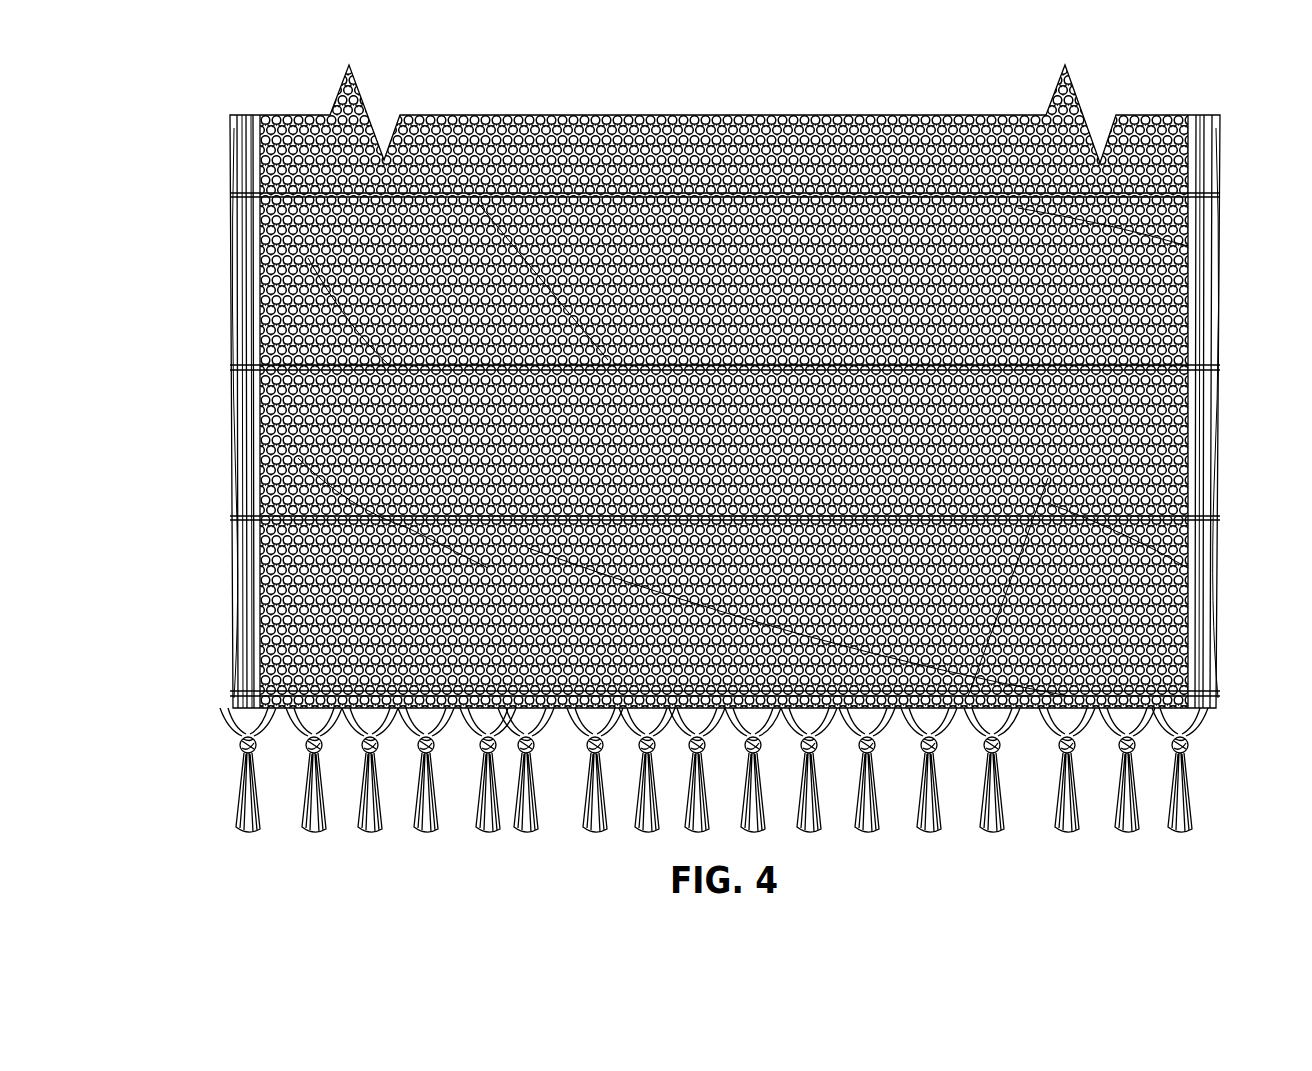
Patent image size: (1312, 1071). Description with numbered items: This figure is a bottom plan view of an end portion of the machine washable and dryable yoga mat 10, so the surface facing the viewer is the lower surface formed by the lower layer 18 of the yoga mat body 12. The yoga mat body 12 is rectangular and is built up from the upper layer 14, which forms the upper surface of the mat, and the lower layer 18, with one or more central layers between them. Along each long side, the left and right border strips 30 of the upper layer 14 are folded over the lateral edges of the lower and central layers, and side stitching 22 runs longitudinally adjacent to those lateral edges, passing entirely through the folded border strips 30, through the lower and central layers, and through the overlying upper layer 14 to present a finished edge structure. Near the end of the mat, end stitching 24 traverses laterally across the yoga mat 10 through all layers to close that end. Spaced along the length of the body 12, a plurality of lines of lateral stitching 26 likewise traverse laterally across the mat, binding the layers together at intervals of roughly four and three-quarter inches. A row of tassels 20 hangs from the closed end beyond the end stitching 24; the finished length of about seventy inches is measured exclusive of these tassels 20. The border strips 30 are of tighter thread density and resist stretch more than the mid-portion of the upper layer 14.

The machine washable and dryable yoga mat 10 is at (725, 438).
The yoga mat body 12 is at (243, 358).
The upper layer 14 is at (235, 446).
The lower layer 18 is at (295, 626).
The tassels 20 is at (1182, 797).
The side stitching 22 is at (1190, 222).
The end stitching 24 is at (318, 688).
The lateral stitching 26 is at (1172, 356).
The border strips 30 is at (232, 287).